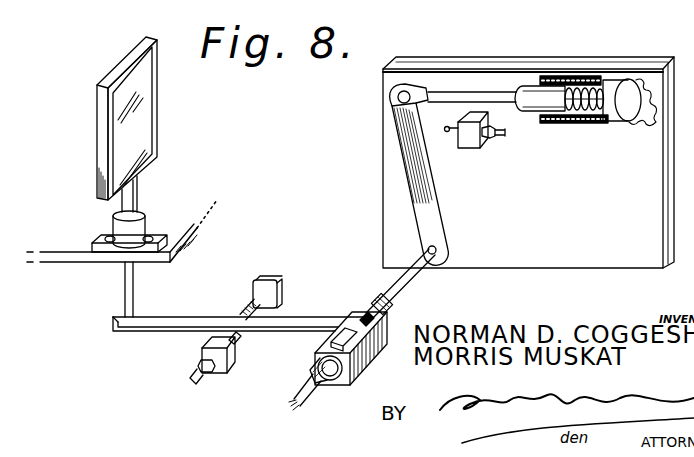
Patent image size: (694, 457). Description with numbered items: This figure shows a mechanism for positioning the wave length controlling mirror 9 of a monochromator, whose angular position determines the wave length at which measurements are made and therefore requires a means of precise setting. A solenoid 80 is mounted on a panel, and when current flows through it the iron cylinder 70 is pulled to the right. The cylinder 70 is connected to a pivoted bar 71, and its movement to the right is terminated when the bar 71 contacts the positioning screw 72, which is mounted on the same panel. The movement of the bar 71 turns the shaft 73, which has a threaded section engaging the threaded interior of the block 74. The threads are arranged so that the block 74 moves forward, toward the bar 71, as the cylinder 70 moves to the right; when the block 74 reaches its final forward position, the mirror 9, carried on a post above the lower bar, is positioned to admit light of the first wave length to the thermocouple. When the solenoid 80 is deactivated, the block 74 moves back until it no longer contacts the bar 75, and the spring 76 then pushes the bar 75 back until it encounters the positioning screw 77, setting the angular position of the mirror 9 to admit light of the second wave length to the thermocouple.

The wave length controlling mirror 9 is at (138, 88).
The iron cylinder 70 is at (535, 103).
The bar 71 is at (430, 210).
The positioning screw 72 is at (448, 132).
The shaft 73 is at (299, 408).
The block 74 is at (363, 368).
The bar 75 is at (268, 333).
The spring 76 is at (243, 311).
The positioning screw 77 is at (196, 379).
The solenoid 80 is at (610, 117).